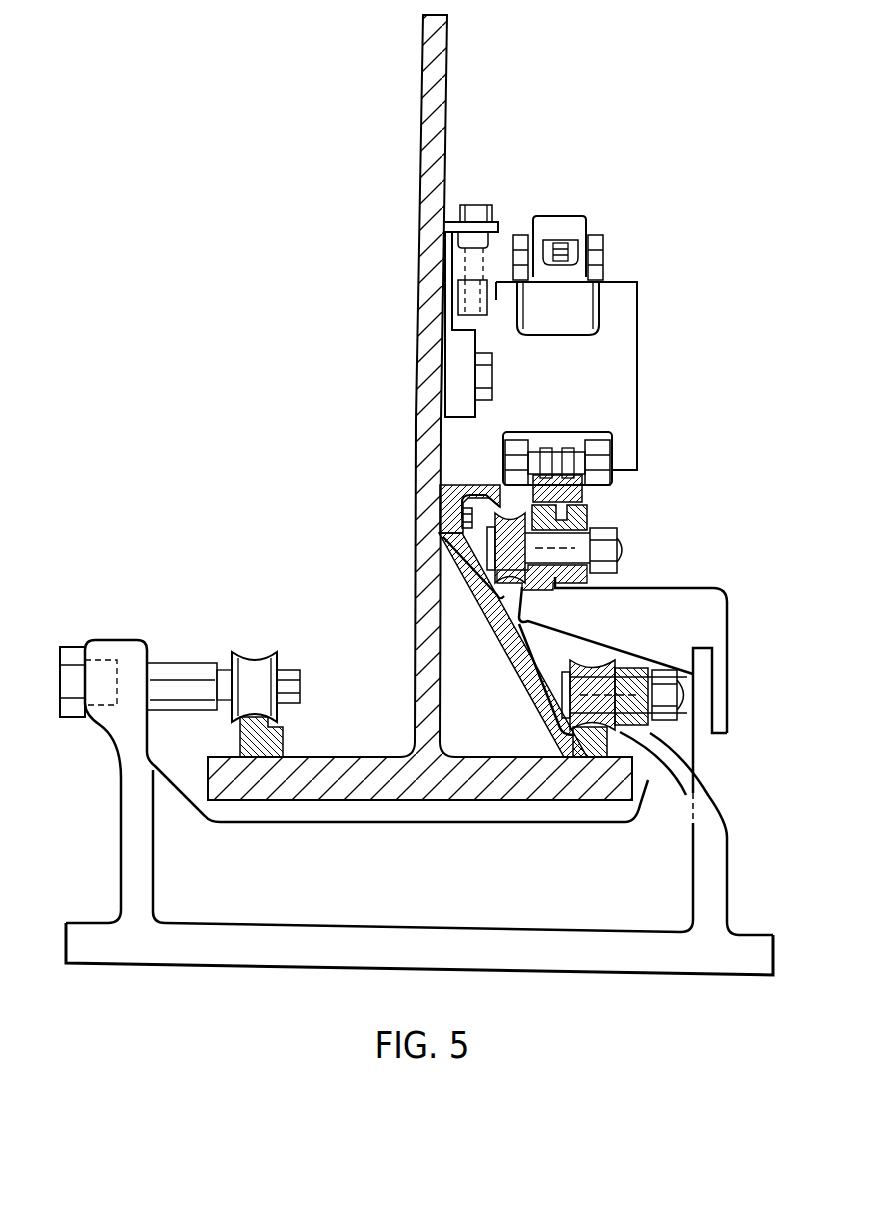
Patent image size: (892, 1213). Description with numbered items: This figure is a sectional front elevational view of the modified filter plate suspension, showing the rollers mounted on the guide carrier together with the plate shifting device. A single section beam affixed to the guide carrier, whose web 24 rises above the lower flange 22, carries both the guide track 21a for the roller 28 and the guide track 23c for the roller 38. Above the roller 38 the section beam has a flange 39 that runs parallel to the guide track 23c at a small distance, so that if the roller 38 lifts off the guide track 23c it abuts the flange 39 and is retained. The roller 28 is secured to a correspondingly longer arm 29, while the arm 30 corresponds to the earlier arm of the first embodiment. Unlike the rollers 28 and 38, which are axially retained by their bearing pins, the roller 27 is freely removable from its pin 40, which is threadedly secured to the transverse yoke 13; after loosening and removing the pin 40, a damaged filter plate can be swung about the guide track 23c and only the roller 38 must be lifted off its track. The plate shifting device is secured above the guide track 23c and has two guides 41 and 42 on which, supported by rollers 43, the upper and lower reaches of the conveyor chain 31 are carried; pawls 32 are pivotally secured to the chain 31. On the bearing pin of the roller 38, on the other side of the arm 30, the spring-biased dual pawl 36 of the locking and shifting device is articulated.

The transverse yoke 13 is at (242, 948).
The guide track 21a is at (572, 745).
The lower flange 22 is at (283, 740).
The guide track 23c is at (497, 590).
The web 24 is at (424, 153).
The roller 27 is at (255, 668).
The roller 28 is at (601, 660).
The arm 29 is at (670, 782).
The arm 30 is at (700, 600).
The drive chain 31 is at (563, 262).
The pawl 32 is at (585, 490).
The dual pawl 36 is at (587, 515).
The roller 38 is at (462, 517).
The flange 39 is at (503, 466).
The pin 40 is at (187, 676).
The guide 41 is at (617, 282).
The guide 42 is at (612, 470).
The rollers 43 is at (612, 445).